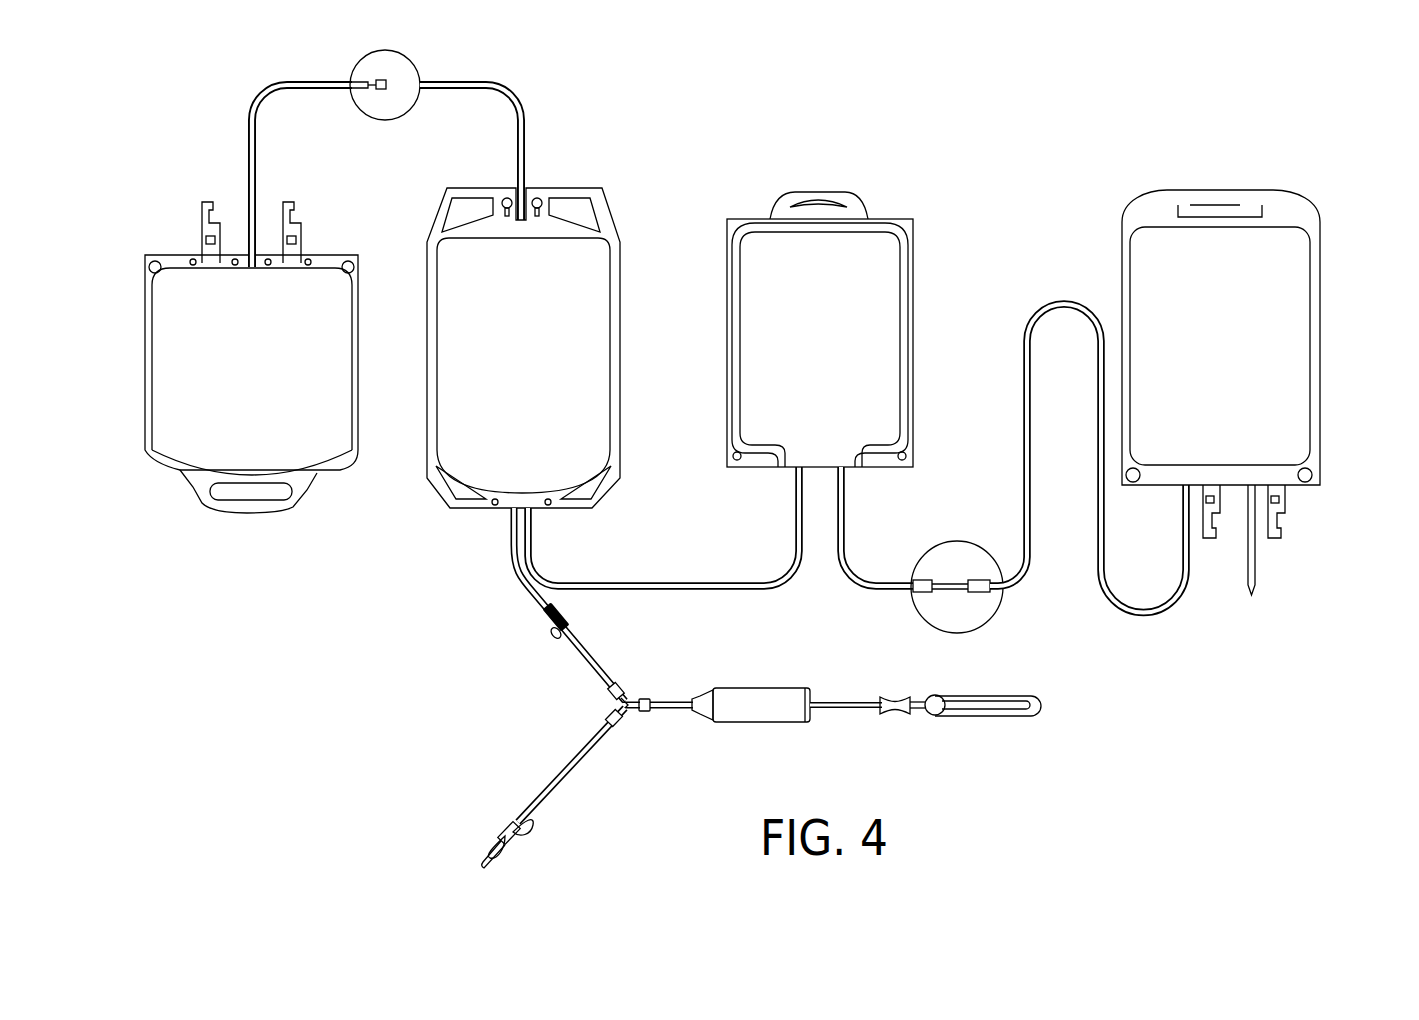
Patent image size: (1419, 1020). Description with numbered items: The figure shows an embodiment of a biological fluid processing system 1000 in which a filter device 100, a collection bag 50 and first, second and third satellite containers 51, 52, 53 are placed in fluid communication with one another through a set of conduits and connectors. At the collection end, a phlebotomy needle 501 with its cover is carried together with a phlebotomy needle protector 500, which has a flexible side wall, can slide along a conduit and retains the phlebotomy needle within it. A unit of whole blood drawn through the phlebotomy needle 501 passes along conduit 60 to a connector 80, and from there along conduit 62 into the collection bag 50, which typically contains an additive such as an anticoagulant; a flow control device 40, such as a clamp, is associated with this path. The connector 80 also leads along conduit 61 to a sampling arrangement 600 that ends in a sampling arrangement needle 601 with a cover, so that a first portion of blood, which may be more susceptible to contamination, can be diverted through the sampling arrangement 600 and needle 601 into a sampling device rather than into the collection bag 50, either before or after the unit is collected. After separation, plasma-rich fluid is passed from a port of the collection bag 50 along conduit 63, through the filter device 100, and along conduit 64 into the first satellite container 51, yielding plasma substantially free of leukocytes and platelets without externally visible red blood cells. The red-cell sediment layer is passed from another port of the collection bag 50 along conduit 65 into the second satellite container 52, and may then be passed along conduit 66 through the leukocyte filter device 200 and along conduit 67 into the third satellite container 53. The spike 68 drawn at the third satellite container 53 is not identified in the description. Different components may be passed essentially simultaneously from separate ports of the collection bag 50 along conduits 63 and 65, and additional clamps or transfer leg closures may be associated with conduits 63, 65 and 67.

The biological fluid processing system 1000 is at (1297, 760).
The first satellite container 51 is at (310, 440).
The conduit 64 is at (247, 155).
The filter device 100 is at (402, 102).
The conduit 63 is at (525, 152).
The collection bag 50 is at (573, 442).
The conduit 65 is at (675, 592).
The conduit 62 is at (518, 580).
The flow control device 40 is at (550, 630).
The connector 80 is at (630, 700).
The sampling arrangement 600 is at (699, 791).
The conduit 61 is at (560, 770).
The sampling arrangement needle 601 is at (490, 855).
The phlebotomy needle protector 500 is at (786, 742).
The conduit 60 is at (862, 710).
The phlebotomy needle 501 is at (977, 707).
The second satellite container 52 is at (877, 425).
The conduit 66 is at (875, 592).
The leukocyte filter device 200 is at (965, 615).
The conduit 67 is at (1021, 436).
The third satellite container 53 is at (1297, 447).
The spike 68 is at (1257, 558).